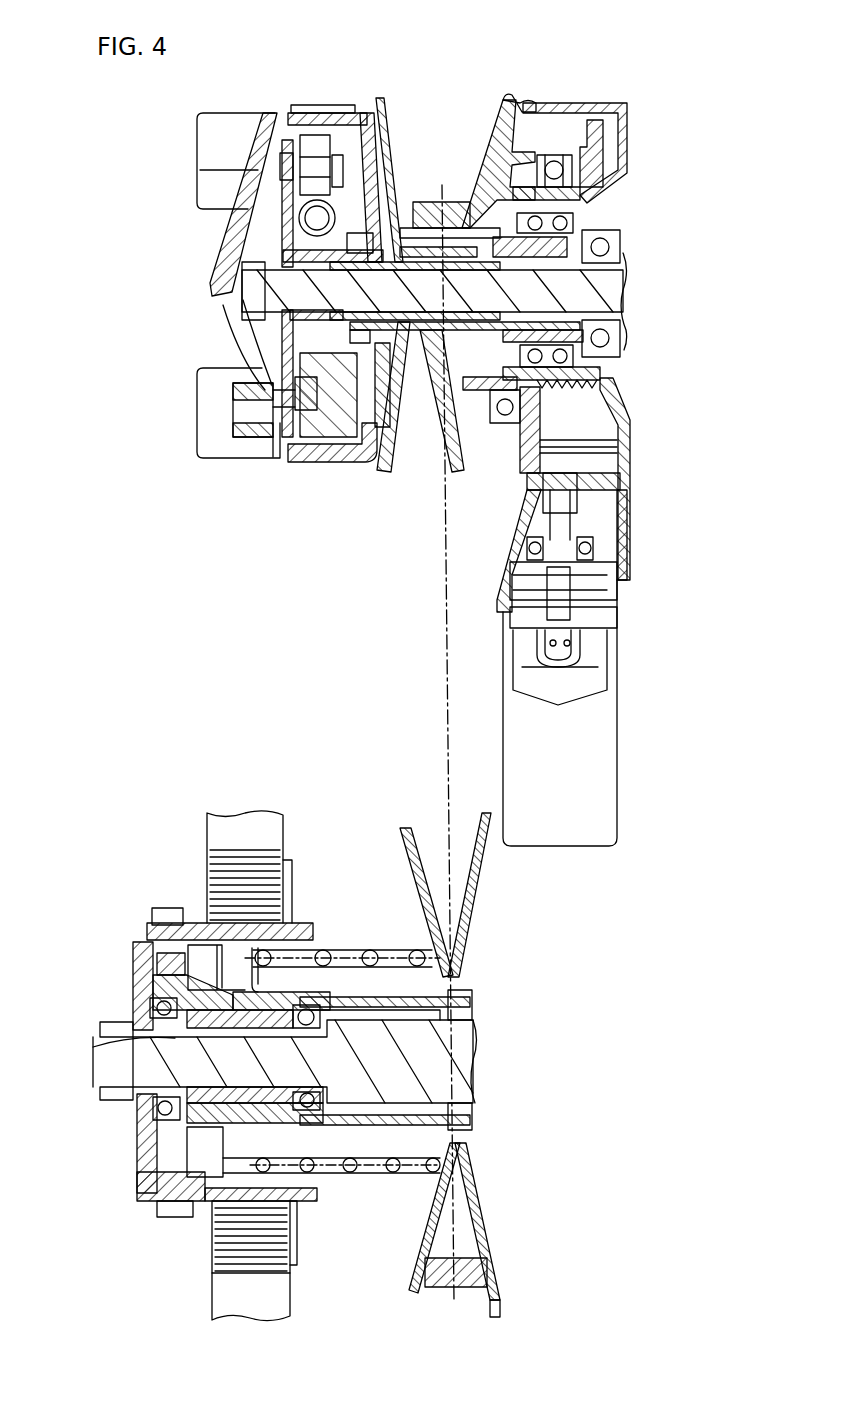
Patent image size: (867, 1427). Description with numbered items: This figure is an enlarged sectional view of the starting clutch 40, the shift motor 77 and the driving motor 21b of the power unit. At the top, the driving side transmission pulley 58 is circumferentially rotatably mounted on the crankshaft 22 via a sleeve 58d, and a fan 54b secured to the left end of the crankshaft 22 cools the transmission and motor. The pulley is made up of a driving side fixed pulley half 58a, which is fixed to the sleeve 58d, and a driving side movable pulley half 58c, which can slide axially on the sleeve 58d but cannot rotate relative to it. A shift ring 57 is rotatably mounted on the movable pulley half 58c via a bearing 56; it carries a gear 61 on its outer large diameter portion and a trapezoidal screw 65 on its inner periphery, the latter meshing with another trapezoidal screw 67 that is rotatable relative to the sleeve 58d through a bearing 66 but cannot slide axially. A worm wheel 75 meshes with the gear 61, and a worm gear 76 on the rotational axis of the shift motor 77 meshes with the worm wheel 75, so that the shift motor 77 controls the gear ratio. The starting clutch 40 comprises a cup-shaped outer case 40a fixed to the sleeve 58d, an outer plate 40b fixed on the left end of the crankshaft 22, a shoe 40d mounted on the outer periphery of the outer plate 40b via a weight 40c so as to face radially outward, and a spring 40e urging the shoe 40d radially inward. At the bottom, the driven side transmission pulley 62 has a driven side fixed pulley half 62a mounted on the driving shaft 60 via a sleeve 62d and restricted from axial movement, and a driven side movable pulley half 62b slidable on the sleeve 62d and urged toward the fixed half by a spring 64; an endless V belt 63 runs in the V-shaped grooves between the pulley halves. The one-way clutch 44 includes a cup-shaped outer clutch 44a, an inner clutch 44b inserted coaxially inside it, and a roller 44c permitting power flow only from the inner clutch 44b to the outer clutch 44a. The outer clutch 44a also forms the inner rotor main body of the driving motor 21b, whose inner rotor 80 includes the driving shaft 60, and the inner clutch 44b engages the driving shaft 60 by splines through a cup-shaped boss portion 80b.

The driving motor 21b is at (150, 893).
The crankshaft 22 is at (618, 300).
The starting clutch 40 is at (292, 98).
The outer case 40a is at (370, 110).
The outer plate 40b is at (270, 355).
The weight 40c is at (313, 440).
The shoe 40d is at (333, 452).
The spring 40e is at (300, 222).
The one-way clutch 44 is at (55, 905).
The outer clutch 44a is at (147, 932).
The inner clutch 44b is at (150, 985).
The roller 44c is at (140, 960).
The fan 54b is at (198, 145).
The bearing 56 is at (555, 158).
The shift ring 57 is at (607, 125).
The driving side transmission pulley 58 is at (492, 95).
The driving side fixed pulley half 58a is at (388, 100).
The driving side movable pulley half 58c is at (522, 100).
The sleeve 58d is at (622, 228).
The driving shaft 60 is at (500, 1063).
The gear 61 is at (605, 105).
The driven side transmission pulley 62 is at (420, 802).
The driven side fixed pulley half 62a is at (480, 888).
The driven side movable pulley half 62b is at (400, 832).
The sleeve 62d is at (475, 1000).
The endless V belt 63 is at (497, 1272).
The spring 64 is at (350, 1173).
The trapezoidal screw 65 is at (598, 197).
The bearing 66 is at (598, 360).
The trapezoidal screw 67 is at (608, 385).
The worm wheel 75 is at (590, 447).
The worm gear 76 is at (605, 520).
The shift motor 77 is at (620, 728).
The inner rotor 80 is at (120, 1116).
The cup-shaped boss portion 80b is at (100, 1053).